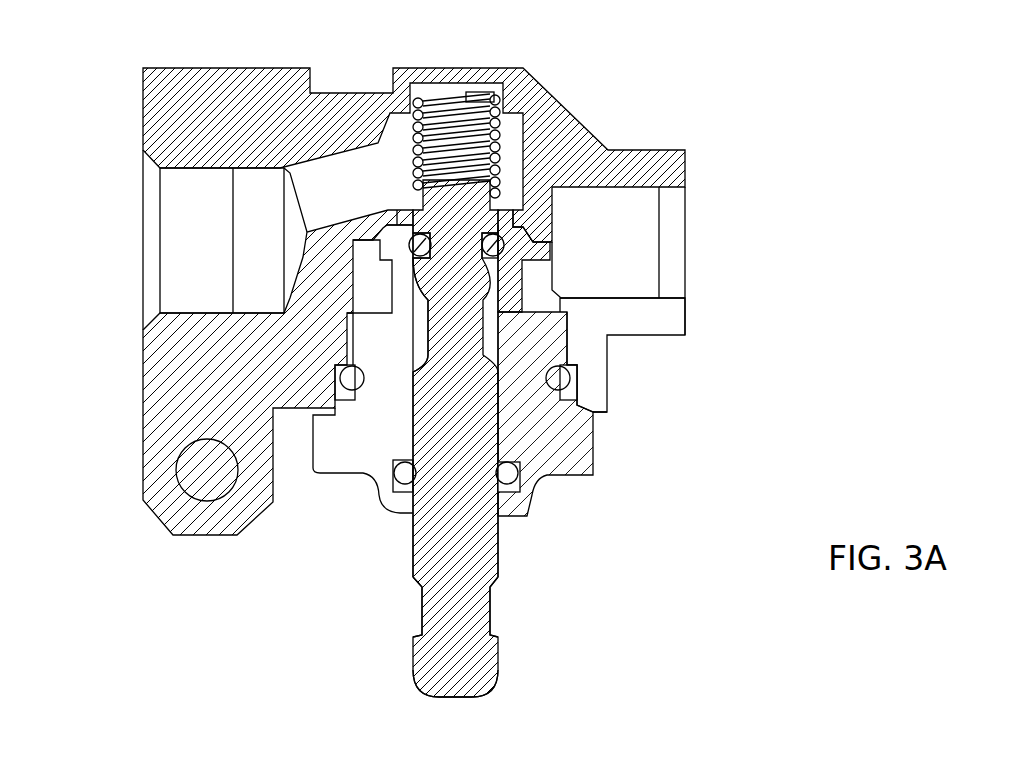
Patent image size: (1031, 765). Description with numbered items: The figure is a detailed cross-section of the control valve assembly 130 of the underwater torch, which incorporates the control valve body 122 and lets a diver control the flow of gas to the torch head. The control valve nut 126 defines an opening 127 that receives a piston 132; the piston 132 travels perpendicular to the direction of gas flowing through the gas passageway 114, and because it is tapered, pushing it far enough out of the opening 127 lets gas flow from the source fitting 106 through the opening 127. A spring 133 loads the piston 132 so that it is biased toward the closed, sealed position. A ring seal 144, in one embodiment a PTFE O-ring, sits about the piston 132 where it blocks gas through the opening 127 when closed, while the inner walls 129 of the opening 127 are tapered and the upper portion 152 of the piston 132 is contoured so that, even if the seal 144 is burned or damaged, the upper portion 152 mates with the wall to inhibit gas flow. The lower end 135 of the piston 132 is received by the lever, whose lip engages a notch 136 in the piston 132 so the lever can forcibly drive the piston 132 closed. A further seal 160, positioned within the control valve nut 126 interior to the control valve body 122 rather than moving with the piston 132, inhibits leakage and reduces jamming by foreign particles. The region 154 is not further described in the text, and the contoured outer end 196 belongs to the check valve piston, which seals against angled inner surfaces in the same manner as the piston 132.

The control valve assembly 130 is at (592, 122).
The outer end of check valve piston 196 is at (187, 215).
The gas passageway 114 is at (247, 267).
The fluid chamber 154 is at (648, 228).
The spring 133 is at (473, 113).
The upper portion of piston 152 is at (503, 217).
The ring seal 144 is at (425, 243).
The inner walls of opening 129 is at (414, 237).
The piston 132 is at (468, 437).
The opening 127 is at (427, 340).
The notch 136 is at (487, 618).
The lower end of piston 135 is at (418, 682).
The seal 160 is at (410, 478).
The control valve nut 126 is at (567, 445).
The control valve body 122 is at (605, 313).
The source fitting 106 is at (655, 320).